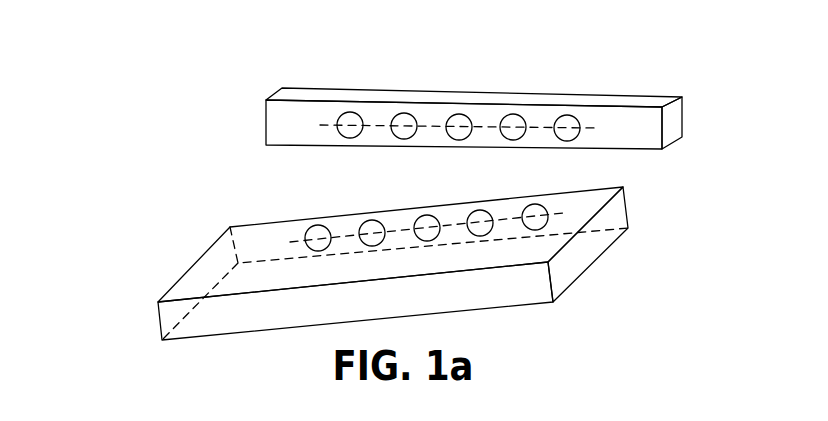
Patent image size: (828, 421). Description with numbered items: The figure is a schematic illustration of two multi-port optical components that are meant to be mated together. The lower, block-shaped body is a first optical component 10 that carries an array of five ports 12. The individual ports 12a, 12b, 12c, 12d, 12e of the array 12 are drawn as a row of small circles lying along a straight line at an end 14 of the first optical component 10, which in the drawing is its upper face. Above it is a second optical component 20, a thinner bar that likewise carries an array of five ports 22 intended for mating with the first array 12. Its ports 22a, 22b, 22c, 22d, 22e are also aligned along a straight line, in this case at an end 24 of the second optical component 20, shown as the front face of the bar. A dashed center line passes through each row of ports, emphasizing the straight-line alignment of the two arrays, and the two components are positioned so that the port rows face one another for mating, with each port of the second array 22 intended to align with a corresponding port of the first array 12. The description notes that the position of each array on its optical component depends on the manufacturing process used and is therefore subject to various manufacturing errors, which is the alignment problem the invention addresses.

The first optical component 10 is at (375, 247).
The array of five ports 12 is at (384, 203).
The port 12a is at (317, 225).
The port 12b is at (372, 220).
The port 12c is at (427, 215).
The port 12d is at (480, 210).
The port 12e is at (535, 204).
The end of the optical component 14 is at (617, 215).
The second optical component 20 is at (435, 77).
The array of five ports 22 is at (473, 73).
The port 22a is at (350, 112).
The port 22b is at (404, 113).
The port 22c is at (459, 114).
The port 22d is at (513, 114).
The port 22e is at (585, 97).
The end of the second optical component 24 is at (643, 132).